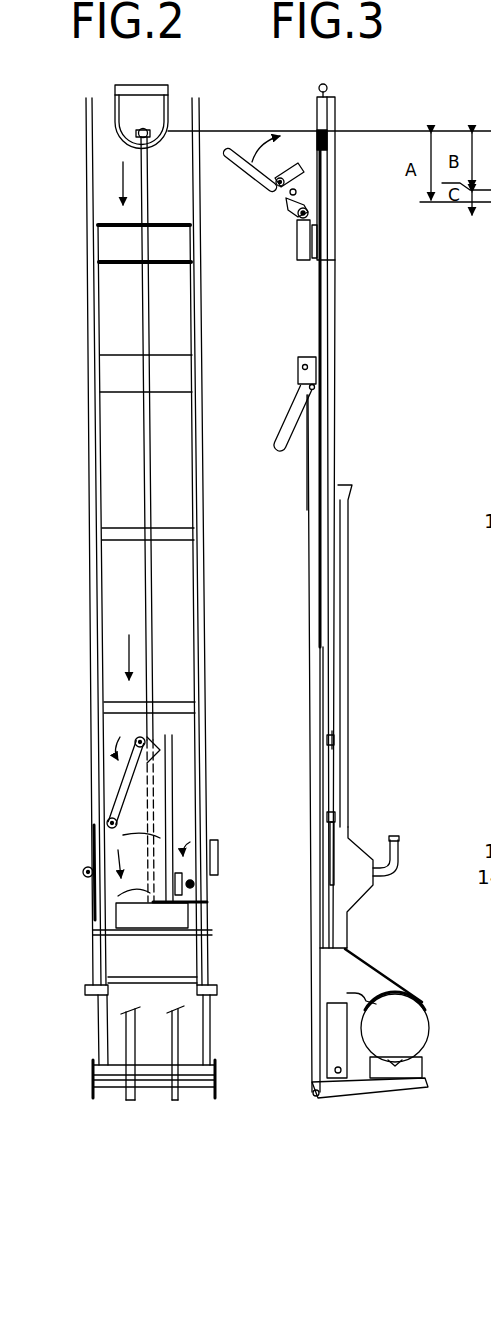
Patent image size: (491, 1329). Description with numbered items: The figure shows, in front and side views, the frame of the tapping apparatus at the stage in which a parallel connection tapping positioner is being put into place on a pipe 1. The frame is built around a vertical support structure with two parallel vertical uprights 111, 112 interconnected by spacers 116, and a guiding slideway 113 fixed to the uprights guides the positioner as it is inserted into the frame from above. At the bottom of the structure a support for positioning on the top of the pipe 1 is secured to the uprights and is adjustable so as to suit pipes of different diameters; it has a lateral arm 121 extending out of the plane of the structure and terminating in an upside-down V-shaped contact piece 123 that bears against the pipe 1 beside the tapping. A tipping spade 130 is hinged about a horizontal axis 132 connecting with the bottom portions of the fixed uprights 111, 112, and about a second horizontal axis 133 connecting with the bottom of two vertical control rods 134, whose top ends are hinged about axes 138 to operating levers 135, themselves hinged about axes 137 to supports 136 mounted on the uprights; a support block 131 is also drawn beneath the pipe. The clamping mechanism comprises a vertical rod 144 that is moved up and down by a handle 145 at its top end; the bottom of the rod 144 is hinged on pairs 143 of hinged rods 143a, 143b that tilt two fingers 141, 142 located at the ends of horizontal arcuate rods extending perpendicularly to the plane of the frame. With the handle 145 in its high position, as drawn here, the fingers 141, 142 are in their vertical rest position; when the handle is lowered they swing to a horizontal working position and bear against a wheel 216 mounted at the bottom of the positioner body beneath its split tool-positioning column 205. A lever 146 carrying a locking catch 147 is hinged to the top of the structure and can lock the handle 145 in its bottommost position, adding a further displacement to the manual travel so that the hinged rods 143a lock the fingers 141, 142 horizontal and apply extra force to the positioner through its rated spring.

In FIG. 3, the pipe 1 is at (418, 1031).
In FIG. 2, the vertical upright 111 is at (91, 458).
In FIG. 3, the vertical upright 111 is at (332, 1043).
In FIG. 2, the vertical upright 112 is at (198, 465).
In FIG. 3, the guiding slideway 113 is at (346, 532).
In FIG. 2, the spacer 116 is at (174, 535).
In FIG. 3, the lateral arm 121 is at (356, 976).
In FIG. 3, the upside-down V-shaped contact piece 123 is at (385, 1000).
In FIG. 2, the tipping spade 130 is at (112, 1090).
In FIG. 3, the tipping spade 130 is at (395, 1086).
In FIG. 3, the support block 131 is at (415, 1070).
In FIG. 2, the horizontal axis 132 is at (192, 1068).
In FIG. 3, the horizontal axis 132 is at (338, 1074).
In FIG. 2, the horizontal axis 133 is at (200, 1092).
In FIG. 3, the horizontal axis 133 is at (313, 1094).
In FIG. 2, the vertical control rod 134 is at (175, 1100).
In FIG. 3, the vertical control rod 134 is at (312, 1003).
In FIG. 3, the operating lever 135 is at (283, 446).
In FIG. 3, the support 136 is at (313, 362).
In FIG. 3, the axis 137 is at (300, 362).
In FIG. 3, the axis 138 is at (317, 388).
In FIG. 2, the finger 141 is at (84, 873).
In FIG. 3, the finger 141 is at (395, 846).
In FIG. 2, the finger 142 is at (218, 860).
In FIG. 2, the pair of hinged rods 143 is at (123, 780).
In FIG. 2, the hinged rod 143a is at (130, 770).
In FIG. 2, the hinged rod 143b is at (89, 856).
In FIG. 2, the vertical rod 144 is at (148, 318).
In FIG. 2, the handle 145 is at (142, 93).
In FIG. 3, the lever 146 is at (252, 178).
In FIG. 3, the locking catch 147 is at (302, 170).
In FIG. 2, the tool-positioning column 205 is at (163, 783).
In FIG. 2, the wheel 216 is at (195, 890).